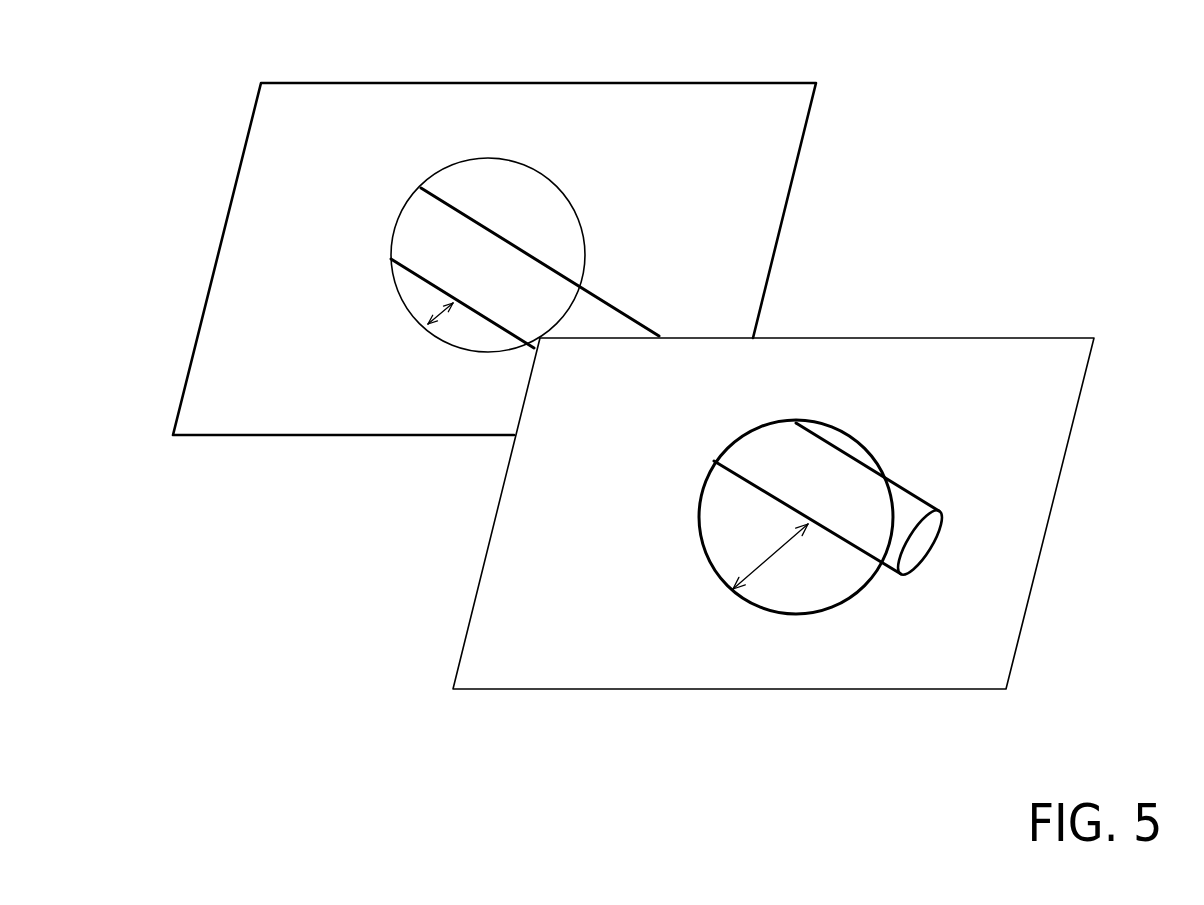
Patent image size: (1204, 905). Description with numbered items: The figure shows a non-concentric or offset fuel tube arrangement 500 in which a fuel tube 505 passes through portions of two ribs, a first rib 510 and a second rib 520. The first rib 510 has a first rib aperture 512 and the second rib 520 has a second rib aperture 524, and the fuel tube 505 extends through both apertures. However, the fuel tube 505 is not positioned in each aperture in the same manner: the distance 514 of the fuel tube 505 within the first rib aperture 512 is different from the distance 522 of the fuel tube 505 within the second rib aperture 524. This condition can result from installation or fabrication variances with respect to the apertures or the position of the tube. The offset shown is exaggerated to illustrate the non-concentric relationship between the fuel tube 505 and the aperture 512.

The non-concentric fuel tube arrangement 500 is at (915, 217).
The fuel tube 505 is at (900, 500).
The first rib 510 is at (378, 438).
The first rib aperture 512 is at (462, 352).
The distance 514 is at (432, 308).
The second rib 520 is at (470, 624).
The distance 522 is at (770, 556).
The second rib aperture 524 is at (800, 617).